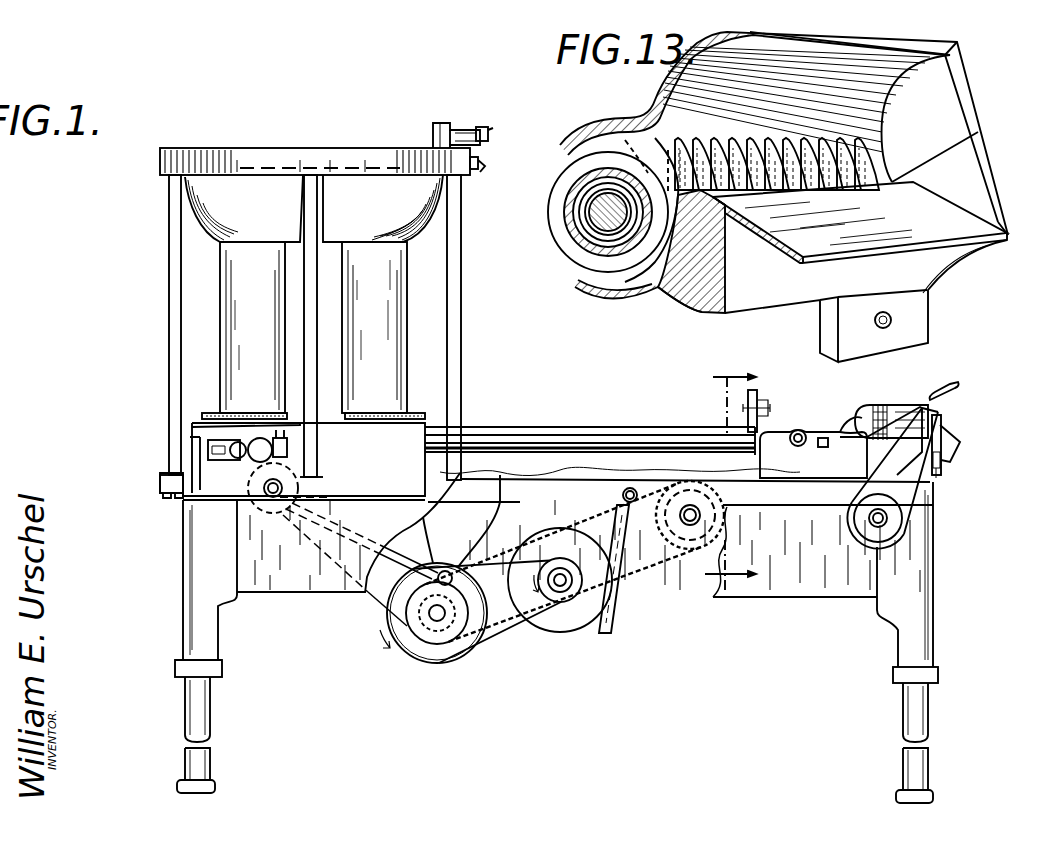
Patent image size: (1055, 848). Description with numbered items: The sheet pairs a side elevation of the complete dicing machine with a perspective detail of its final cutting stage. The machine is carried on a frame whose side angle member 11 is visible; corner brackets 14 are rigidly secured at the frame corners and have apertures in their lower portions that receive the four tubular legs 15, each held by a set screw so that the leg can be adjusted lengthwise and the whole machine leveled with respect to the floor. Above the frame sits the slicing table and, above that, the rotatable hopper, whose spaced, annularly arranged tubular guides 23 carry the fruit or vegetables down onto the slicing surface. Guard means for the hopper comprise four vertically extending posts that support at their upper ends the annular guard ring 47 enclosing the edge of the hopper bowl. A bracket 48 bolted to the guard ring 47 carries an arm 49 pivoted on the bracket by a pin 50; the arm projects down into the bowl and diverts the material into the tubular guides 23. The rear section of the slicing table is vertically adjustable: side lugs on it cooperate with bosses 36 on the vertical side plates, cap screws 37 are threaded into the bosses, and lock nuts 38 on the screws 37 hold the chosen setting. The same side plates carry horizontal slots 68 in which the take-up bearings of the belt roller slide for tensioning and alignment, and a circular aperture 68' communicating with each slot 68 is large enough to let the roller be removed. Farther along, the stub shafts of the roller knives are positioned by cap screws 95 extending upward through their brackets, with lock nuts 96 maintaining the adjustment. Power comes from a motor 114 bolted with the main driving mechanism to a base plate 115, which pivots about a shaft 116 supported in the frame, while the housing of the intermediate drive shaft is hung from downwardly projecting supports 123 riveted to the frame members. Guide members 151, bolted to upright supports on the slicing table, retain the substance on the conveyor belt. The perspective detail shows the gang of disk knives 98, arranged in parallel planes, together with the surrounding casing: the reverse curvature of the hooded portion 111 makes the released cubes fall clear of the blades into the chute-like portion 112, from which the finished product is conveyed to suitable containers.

In FIG. 1, the side angle member 11 is at (792, 641).
In FIG. 1, the corner bracket 14 is at (160, 563).
In FIG. 1, the tubular leg 15 is at (258, 717).
In FIG. 1, the tubular guide portion 23 is at (382, 292).
In FIG. 1, the boss 36 is at (285, 456).
In FIG. 1, the cap screw 37 is at (282, 413).
In FIG. 1, the lock nut 38 is at (287, 443).
In FIG. 1, the annular guard ring 47 is at (180, 160).
In FIG. 1, the bracket 48 is at (478, 176).
In FIG. 1, the arm 49 is at (437, 137).
In FIG. 1, the pin 50 is at (487, 131).
In FIG. 1, the slot 68 is at (210, 499).
In FIG. 1, the circular aperture 68' is at (326, 544).
In FIG. 1, the cap screw 95 is at (938, 470).
In FIG. 1, the lock nut 96 is at (942, 462).
In FIG. 13, the disk knife 98 is at (873, 160).
In FIG. 13, the hooded portion 111 is at (917, 65).
In FIG. 13, the chute-like portion 112 is at (935, 222).
In FIG. 1, the motor 114 is at (592, 673).
In FIG. 1, the base plate 115 is at (688, 623).
In FIG. 1, the shaft 116 is at (678, 406).
In FIG. 1, the downwardly projecting support 123 is at (530, 530).
In FIG. 1, the guide member 151 is at (594, 409).